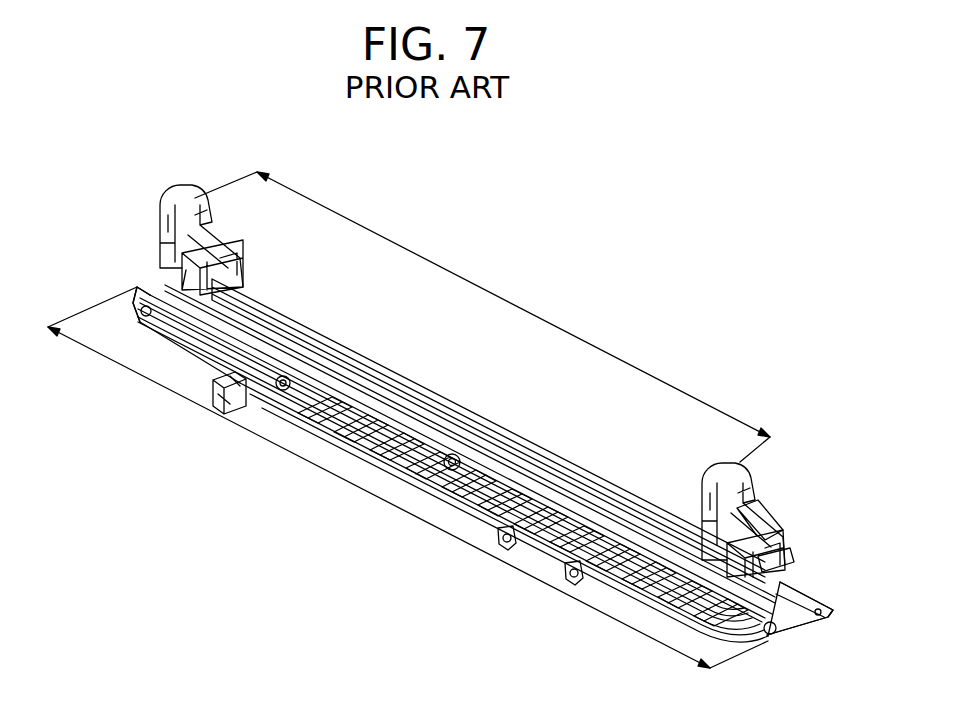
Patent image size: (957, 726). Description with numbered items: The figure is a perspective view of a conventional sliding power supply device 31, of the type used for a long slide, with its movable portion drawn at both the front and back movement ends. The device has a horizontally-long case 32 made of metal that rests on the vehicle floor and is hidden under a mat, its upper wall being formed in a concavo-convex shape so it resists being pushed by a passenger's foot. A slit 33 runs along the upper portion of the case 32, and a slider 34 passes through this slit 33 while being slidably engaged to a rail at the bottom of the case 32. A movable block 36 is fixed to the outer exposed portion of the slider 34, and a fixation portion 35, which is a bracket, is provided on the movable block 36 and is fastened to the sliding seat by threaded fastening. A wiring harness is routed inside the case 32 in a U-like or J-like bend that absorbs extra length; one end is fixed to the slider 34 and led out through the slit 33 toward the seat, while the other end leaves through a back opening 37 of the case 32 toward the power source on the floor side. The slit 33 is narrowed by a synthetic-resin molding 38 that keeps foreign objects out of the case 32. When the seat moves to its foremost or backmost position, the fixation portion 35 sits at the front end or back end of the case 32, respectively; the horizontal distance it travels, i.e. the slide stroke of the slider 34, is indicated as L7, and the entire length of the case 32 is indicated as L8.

The sliding power supply device 31 is at (601, 295).
The case 32 is at (440, 502).
The slit 33 is at (782, 560).
The slider 34 is at (782, 516).
The fixation portion 35 is at (190, 205).
The movable block 36 is at (755, 519).
The back opening 37 is at (218, 376).
The molding 38 is at (612, 504).
The horizontal movement distance L7 is at (482, 317).
The entire length of the case L8 is at (408, 477).